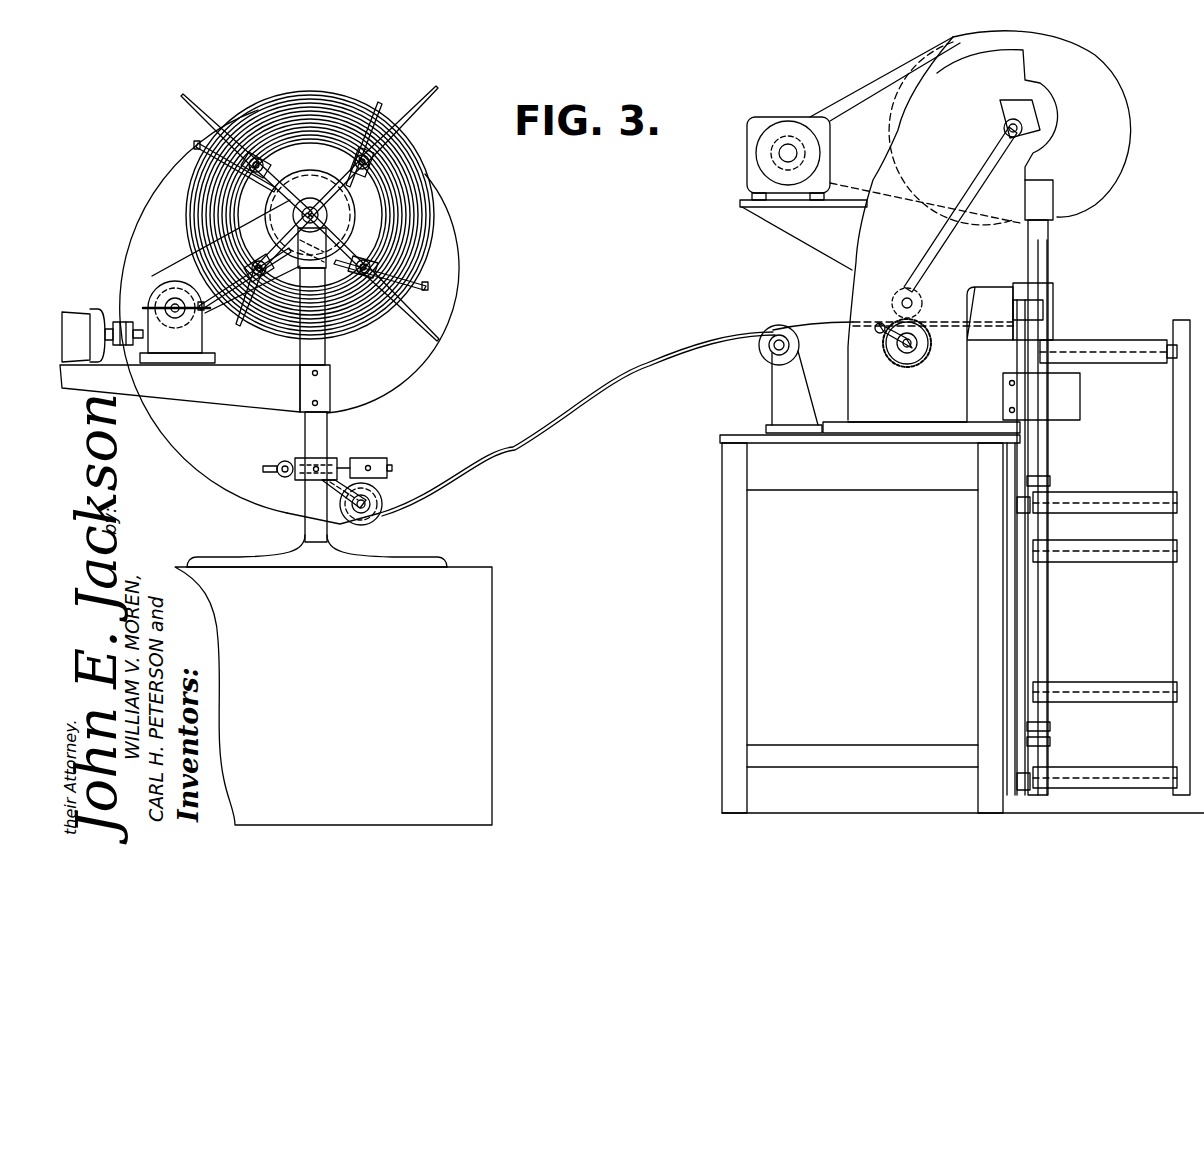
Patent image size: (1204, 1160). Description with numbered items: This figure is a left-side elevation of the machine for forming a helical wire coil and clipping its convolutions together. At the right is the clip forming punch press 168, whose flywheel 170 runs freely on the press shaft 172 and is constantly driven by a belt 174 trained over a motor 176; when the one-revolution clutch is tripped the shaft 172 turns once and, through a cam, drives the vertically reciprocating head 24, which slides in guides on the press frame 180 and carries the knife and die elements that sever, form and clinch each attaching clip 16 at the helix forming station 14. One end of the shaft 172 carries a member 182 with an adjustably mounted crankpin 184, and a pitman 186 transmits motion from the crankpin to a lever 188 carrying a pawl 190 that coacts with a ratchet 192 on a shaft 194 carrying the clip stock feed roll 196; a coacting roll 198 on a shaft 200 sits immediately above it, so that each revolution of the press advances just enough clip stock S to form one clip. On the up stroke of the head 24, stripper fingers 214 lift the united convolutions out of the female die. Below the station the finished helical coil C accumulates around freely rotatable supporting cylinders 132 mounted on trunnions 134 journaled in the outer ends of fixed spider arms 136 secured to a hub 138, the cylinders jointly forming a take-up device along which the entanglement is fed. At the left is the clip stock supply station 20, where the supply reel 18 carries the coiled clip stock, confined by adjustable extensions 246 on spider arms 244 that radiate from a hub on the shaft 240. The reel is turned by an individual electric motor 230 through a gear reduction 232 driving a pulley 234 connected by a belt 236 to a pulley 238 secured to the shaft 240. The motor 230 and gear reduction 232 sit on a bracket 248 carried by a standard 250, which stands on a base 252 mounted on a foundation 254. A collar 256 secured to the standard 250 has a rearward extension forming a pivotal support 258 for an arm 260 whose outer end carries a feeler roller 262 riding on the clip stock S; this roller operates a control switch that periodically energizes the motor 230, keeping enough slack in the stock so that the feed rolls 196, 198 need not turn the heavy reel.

The helix forming station 14 is at (1088, 386).
The attaching clip 16 is at (1046, 478).
The clip stock supply reel 18 is at (273, 102).
The clip stock supply station 20 is at (170, 404).
The vertically reciprocating head 24 is at (1048, 290).
The supporting cylinders 132 is at (1135, 340).
The trunnions 134 is at (1018, 503).
The fixed spider arms 136 is at (1183, 450).
The hub 138 is at (1133, 558).
The clip forming punch press 168 is at (897, 124).
The flywheel 170 is at (1112, 71).
The press shaft 172 is at (1040, 126).
The belt 174 is at (877, 82).
The motor 176 is at (768, 117).
The press frame 180 is at (893, 152).
The crank member 182 is at (1025, 99).
The crankpin 184 is at (1006, 124).
The pitman 186 is at (988, 167).
The lever 188 is at (878, 333).
The pawl 190 is at (887, 307).
The ratchet 192 is at (919, 358).
The feed roll shaft 194 is at (908, 348).
The clip stock feed roll 196 is at (893, 348).
The coacting roll 198 is at (922, 290).
The shaft 200 is at (918, 302).
The stripper fingers 214 is at (1045, 320).
The electric motor 230 is at (95, 292).
The gear reduction 232 is at (152, 292).
The pulley 234 is at (160, 296).
The belt 236 is at (181, 276).
The pulley 238 is at (298, 176).
The reel shaft 240 is at (318, 213).
The spider arms 244 is at (199, 144).
The adjustable extensions 246 is at (212, 90).
The bracket 248 is at (125, 386).
The standard 250 is at (320, 350).
The base 252 is at (436, 566).
The foundation 254 is at (468, 596).
The collar 256 is at (318, 445).
The pivotal support 258 is at (282, 471).
The arm 260 is at (300, 480).
The feeler roller 262 is at (375, 496).
The clip stock S is at (626, 381).
The helical coil C is at (1048, 637).